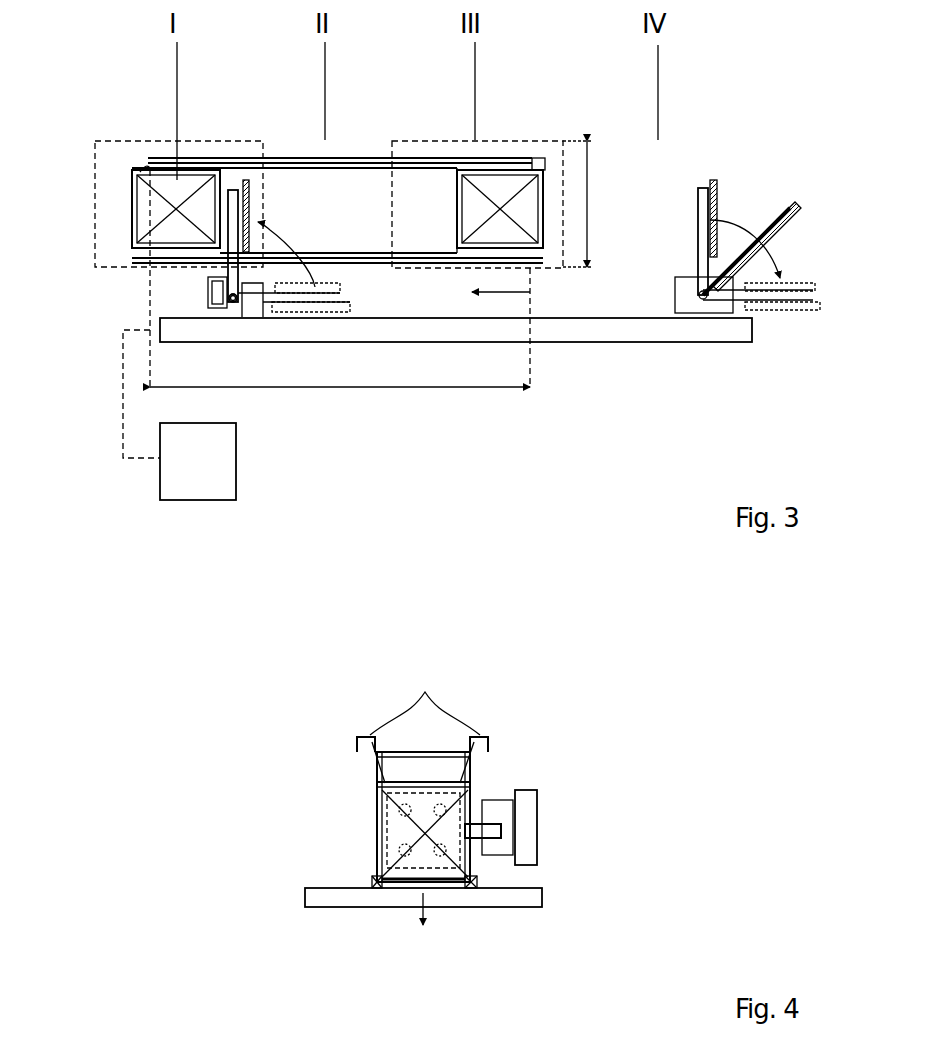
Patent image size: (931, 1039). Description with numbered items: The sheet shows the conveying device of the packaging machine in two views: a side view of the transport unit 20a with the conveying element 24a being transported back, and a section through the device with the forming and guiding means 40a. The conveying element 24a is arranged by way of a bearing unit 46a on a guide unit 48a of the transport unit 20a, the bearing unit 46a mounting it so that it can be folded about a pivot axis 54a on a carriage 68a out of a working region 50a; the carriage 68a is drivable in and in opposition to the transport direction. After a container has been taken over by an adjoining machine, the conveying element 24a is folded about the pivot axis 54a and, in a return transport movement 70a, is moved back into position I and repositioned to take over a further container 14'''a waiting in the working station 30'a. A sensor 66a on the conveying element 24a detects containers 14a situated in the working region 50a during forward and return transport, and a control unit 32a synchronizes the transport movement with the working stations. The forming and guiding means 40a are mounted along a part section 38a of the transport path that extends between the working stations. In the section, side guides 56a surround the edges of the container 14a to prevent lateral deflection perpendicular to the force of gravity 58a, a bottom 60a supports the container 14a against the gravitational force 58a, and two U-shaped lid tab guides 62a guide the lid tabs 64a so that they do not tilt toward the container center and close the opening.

In FIG. 3, the container 14'''a is at (157, 151).
In FIG. 4, the container 14a is at (380, 820).
In FIG. 3, the working station 30'a is at (179, 159).
In FIG. 3, the conveying element 24a is at (233, 190).
In FIG. 4, the conveying element 24a is at (387, 853).
In FIG. 3, the lid tab guides 62a is at (330, 263).
In FIG. 4, the lid tab guides 62a is at (425, 699).
In FIG. 3, the lid tabs 64a is at (135, 168).
In FIG. 4, the lid tabs 64a is at (468, 757).
In FIG. 3, the sensor 66a is at (208, 292).
In FIG. 3, the carriage 68a is at (150, 310).
In FIG. 3, the part section 38a is at (352, 312).
In FIG. 3, the guide unit 48a is at (625, 318).
In FIG. 3, the working region 50a is at (590, 230).
In FIG. 3, the transport unit 20a is at (492, 362).
In FIG. 4, the transport unit 20a is at (560, 824).
In FIG. 3, the return transport movement 70a is at (502, 293).
In FIG. 3, the pivot axis 54a is at (233, 300).
In FIG. 3, the bearing unit 46a is at (233, 298).
In FIG. 3, the control unit 32a is at (160, 483).
In FIG. 4, the forming and guiding means 40a is at (475, 884).
In FIG. 4, the side guides 56a is at (450, 890).
In FIG. 4, the bottom 60a is at (525, 888).
In FIG. 4, the force of gravity 58a is at (425, 910).